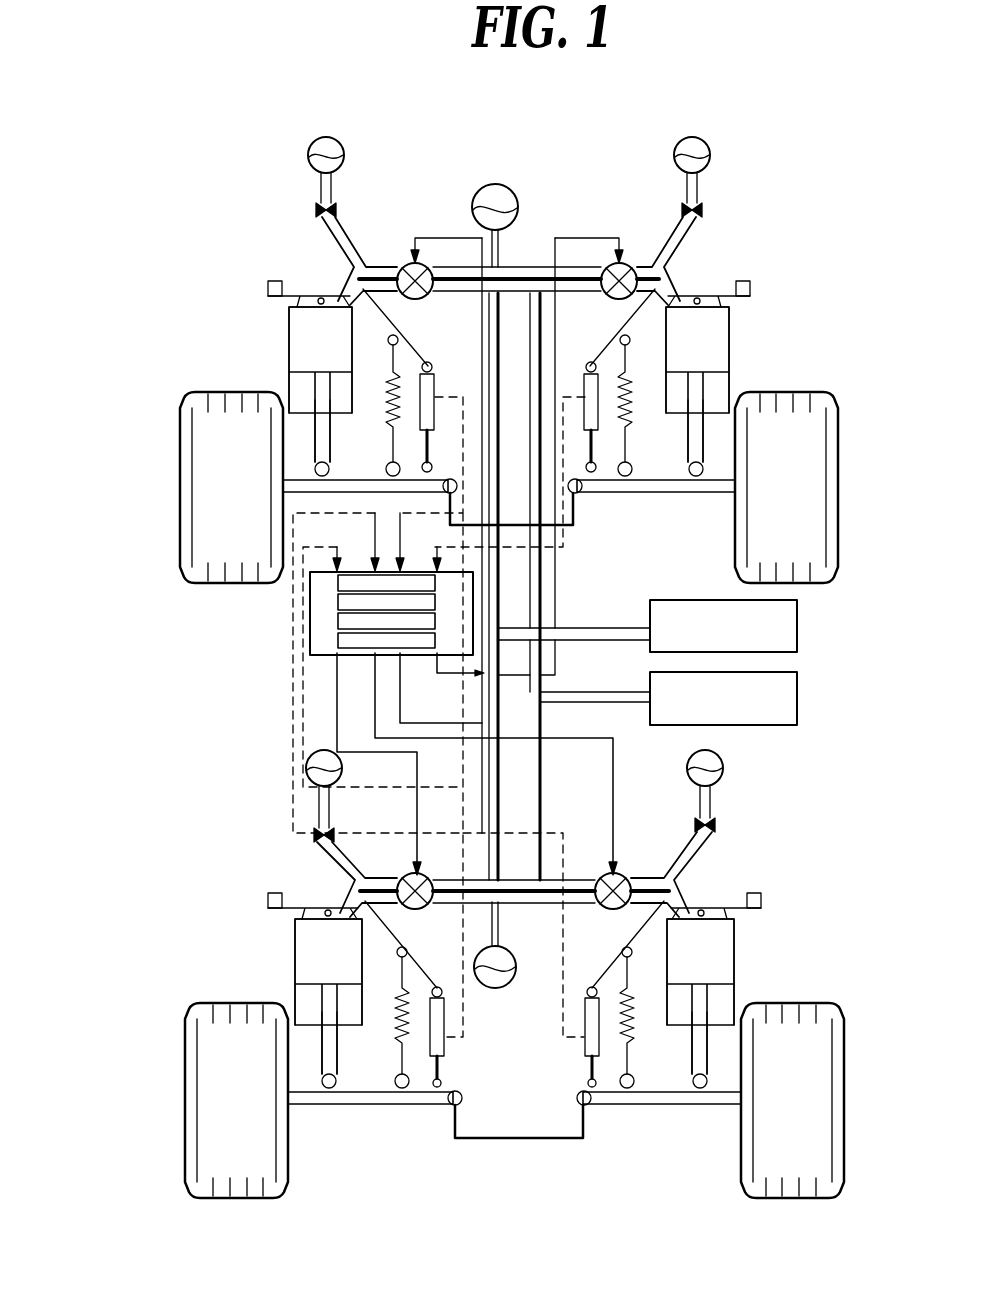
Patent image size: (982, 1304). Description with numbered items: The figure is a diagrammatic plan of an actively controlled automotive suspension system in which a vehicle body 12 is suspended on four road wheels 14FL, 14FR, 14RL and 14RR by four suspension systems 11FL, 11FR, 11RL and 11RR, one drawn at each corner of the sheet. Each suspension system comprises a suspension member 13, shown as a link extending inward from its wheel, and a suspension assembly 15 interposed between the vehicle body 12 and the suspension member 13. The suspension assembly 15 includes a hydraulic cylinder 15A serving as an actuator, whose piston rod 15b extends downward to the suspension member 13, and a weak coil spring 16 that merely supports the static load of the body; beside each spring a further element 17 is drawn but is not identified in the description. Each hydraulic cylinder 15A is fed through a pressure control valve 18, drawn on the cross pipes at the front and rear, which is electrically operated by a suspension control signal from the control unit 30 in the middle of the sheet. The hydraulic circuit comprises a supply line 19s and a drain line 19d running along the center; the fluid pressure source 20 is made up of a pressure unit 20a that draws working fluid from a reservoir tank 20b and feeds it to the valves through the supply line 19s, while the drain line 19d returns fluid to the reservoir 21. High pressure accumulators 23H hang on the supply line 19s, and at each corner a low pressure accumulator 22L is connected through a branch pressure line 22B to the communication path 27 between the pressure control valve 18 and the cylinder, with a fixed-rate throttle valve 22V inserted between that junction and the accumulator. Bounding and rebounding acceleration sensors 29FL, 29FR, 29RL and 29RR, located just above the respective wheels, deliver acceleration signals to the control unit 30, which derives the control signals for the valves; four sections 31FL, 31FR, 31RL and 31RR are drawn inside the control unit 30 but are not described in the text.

The rear-right suspension system 11RR is at (252, 323).
The rear-left suspension system 11RL is at (765, 326).
The front-right suspension system 11FR is at (262, 948).
The front-left suspension system 11FL is at (772, 934).
The vehicle body 12 is at (573, 527).
The suspension member 13 is at (352, 458).
The rear-right road wheel 14RR is at (190, 420).
The rear-left road wheel 14RL is at (800, 392).
The front-right road wheel 14FR is at (208, 1095).
The front-left road wheel 14FL is at (790, 1200).
The suspension assembly 15 is at (288, 375).
The hydraulic cylinder 15A is at (300, 294).
The piston rod 15b is at (704, 470).
The coil spring 16 is at (390, 405).
The shock absorber 17 is at (430, 364).
The pressure control valve 18 is at (400, 266).
The supply line 19s is at (490, 750).
The drain line 19d is at (542, 770).
The fluid pressure source 20 is at (690, 600).
The pressure unit 20a is at (797, 630).
The reservoir tank 20b is at (797, 703).
The reservoir 21 is at (650, 685).
The low pressure accumulator 22L is at (340, 145).
The throttle valve 22V is at (318, 207).
The branch pressure line 22B is at (340, 246).
The high pressure accumulator 23H is at (485, 188).
The communication path 27 is at (372, 292).
The rear-right bounding and rebounding acceleration sensor 29RR is at (262, 285).
The rear-left bounding and rebounding acceleration sensor 29RL is at (757, 284).
The front-right bounding and rebounding acceleration sensor 29FR is at (268, 898).
The front-left bounding and rebounding acceleration sensor 29FL is at (764, 892).
The control unit 30 is at (310, 655).
The front left control section 31FL is at (340, 583).
The front right control section 31FR is at (340, 601).
The rear left control section 31RL is at (340, 620).
The rear right control section 31RR is at (420, 648).